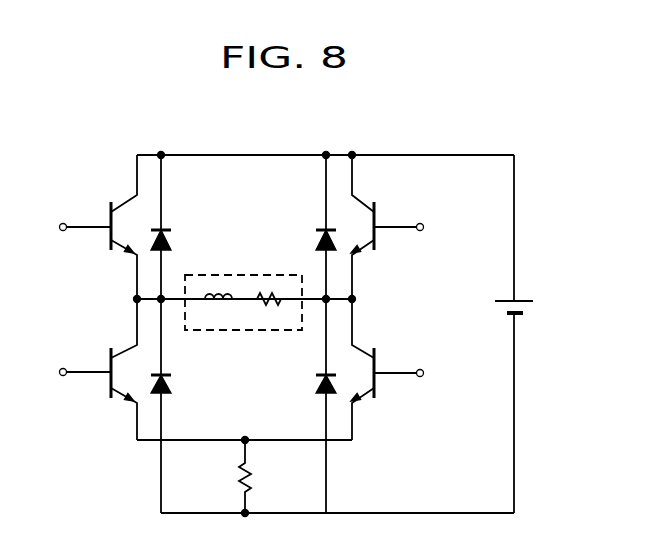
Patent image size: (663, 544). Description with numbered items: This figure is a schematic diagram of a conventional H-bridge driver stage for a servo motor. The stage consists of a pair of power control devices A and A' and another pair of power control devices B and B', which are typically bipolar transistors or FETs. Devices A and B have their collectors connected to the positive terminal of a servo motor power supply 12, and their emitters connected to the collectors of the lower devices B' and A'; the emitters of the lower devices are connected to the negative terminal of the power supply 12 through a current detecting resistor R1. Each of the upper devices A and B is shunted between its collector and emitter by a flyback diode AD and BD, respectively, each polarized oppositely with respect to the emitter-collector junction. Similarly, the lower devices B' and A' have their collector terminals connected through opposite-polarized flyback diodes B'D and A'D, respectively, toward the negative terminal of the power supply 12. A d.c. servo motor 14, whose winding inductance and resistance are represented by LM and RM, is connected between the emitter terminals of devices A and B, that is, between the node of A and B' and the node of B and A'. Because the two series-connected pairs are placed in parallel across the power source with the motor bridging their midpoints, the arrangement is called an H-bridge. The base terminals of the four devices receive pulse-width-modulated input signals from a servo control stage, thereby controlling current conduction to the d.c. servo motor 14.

The power control device A is at (99, 227).
The power control device B is at (387, 227).
The power control device A' is at (387, 369).
The power control device B' is at (99, 369).
The flyback diode AD is at (169, 239).
The flyback diode BD is at (318, 240).
The flyback diode A'D is at (306, 368).
The flyback diode B'D is at (180, 368).
The d.c. servo motor 14 is at (251, 282).
The winding inductance LM is at (218, 310).
The winding resistance RM is at (270, 310).
The current detecting resistor R1 is at (250, 478).
The servo motor power supply 12 is at (530, 302).